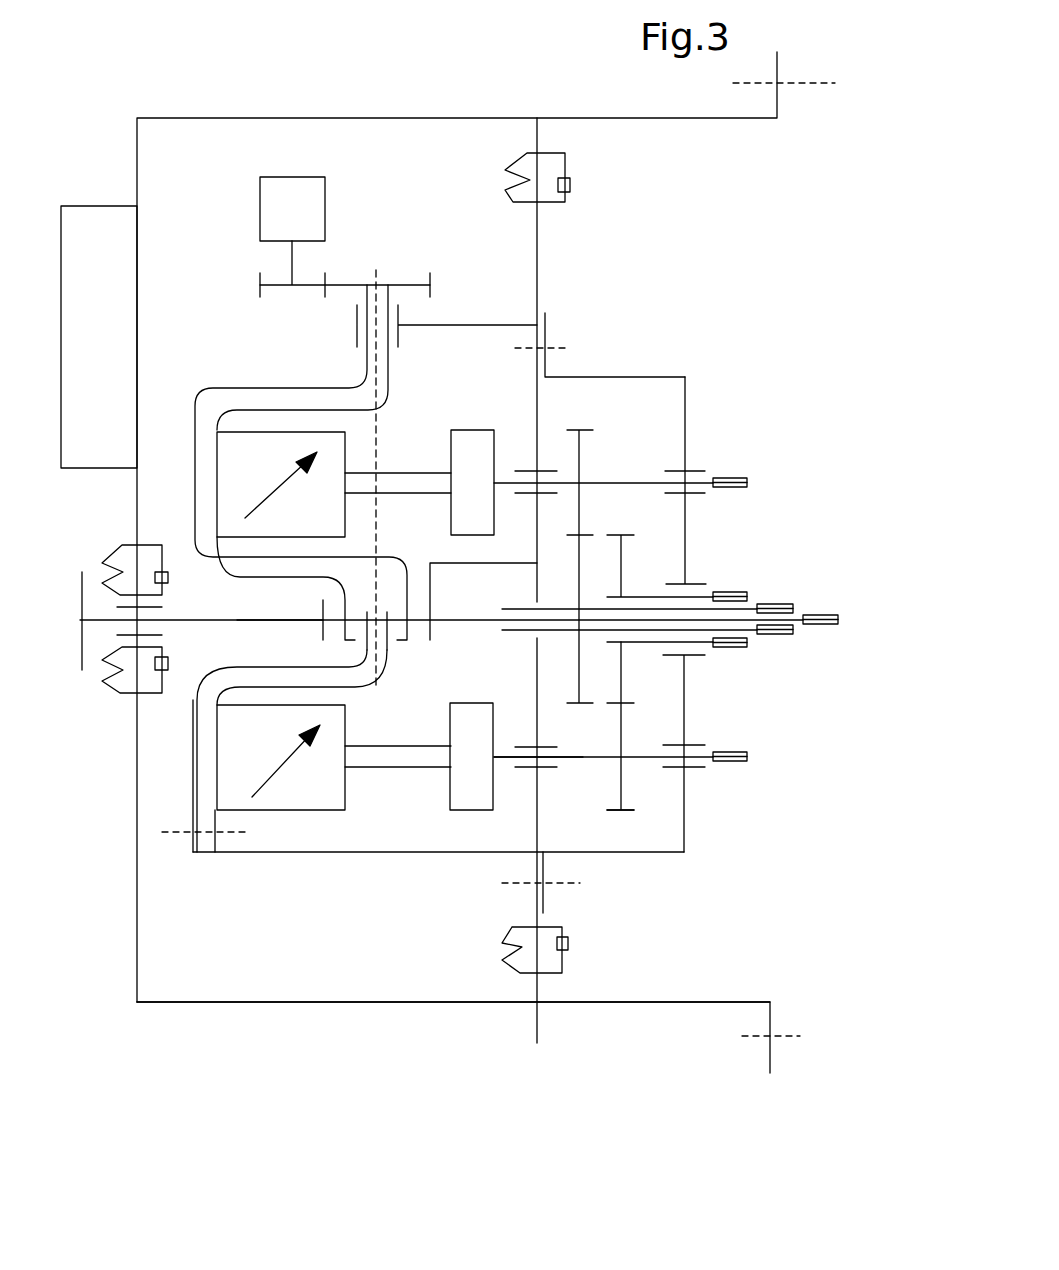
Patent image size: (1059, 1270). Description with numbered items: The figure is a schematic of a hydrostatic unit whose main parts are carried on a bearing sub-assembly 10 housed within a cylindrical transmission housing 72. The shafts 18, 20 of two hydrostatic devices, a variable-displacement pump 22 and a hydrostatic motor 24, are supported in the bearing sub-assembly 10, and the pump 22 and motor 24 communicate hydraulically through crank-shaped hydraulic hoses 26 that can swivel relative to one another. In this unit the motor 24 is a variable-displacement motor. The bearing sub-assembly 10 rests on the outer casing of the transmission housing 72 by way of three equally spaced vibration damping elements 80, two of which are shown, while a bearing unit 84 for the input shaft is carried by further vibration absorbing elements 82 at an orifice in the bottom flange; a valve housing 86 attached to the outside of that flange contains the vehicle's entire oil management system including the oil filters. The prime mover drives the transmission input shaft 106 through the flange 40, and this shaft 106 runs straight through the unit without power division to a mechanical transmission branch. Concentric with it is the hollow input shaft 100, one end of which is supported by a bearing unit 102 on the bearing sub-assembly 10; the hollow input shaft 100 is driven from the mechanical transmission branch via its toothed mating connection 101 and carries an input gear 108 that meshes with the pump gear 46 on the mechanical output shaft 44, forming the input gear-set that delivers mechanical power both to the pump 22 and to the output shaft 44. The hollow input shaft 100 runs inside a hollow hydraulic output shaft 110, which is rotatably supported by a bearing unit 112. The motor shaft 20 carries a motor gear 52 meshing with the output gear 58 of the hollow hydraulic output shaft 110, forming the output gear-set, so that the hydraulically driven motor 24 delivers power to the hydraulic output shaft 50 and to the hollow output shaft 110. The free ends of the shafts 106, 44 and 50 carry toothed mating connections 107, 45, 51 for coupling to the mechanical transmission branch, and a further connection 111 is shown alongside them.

The bearing sub-assembly 10 is at (540, 237).
The variable-displacement pump shaft 18 is at (513, 483).
The motor shaft 20 is at (505, 757).
The variable-displacement pump 22 is at (238, 450).
The hydrostatic motor 24 is at (283, 790).
The hydraulic hoses 26 is at (278, 677).
The flange 40 is at (80, 620).
The mechanical output shaft 44 is at (627, 482).
The toothed mating connection 45 is at (732, 478).
The pump gear 46 is at (580, 455).
The hydraulic output shaft 50 is at (583, 757).
The toothed mating connection 51 is at (730, 762).
The motor gear 52 is at (620, 787).
The output gear 58 is at (620, 668).
The transmission housing 72 is at (260, 1002).
The vibration damping elements 80 is at (547, 173).
The vibration absorbing elements 82 is at (122, 550).
The bearing unit 84 is at (123, 608).
The valve housing 86 is at (100, 218).
The hollow input shaft 100 is at (760, 593).
The toothed mating connection 101 is at (777, 634).
The bearing unit 102 is at (547, 637).
The transmission input shaft 106 is at (237, 620).
The toothed mating connection 107 is at (820, 624).
The input gear 108 is at (579, 545).
The hollow hydraulic output shaft 110 is at (708, 592).
The bearing 111 is at (730, 647).
The bearing unit 112 is at (688, 590).